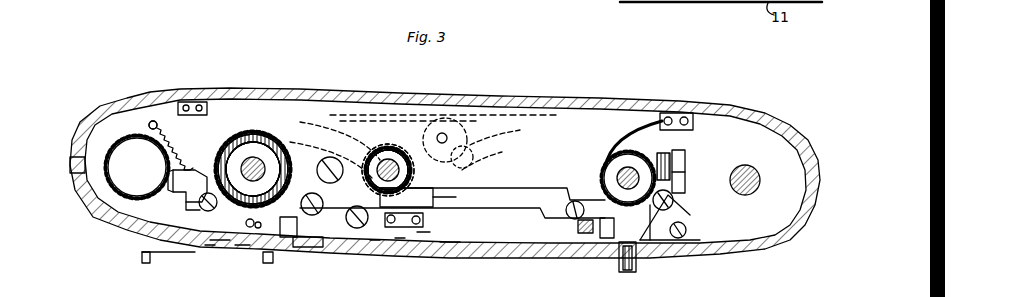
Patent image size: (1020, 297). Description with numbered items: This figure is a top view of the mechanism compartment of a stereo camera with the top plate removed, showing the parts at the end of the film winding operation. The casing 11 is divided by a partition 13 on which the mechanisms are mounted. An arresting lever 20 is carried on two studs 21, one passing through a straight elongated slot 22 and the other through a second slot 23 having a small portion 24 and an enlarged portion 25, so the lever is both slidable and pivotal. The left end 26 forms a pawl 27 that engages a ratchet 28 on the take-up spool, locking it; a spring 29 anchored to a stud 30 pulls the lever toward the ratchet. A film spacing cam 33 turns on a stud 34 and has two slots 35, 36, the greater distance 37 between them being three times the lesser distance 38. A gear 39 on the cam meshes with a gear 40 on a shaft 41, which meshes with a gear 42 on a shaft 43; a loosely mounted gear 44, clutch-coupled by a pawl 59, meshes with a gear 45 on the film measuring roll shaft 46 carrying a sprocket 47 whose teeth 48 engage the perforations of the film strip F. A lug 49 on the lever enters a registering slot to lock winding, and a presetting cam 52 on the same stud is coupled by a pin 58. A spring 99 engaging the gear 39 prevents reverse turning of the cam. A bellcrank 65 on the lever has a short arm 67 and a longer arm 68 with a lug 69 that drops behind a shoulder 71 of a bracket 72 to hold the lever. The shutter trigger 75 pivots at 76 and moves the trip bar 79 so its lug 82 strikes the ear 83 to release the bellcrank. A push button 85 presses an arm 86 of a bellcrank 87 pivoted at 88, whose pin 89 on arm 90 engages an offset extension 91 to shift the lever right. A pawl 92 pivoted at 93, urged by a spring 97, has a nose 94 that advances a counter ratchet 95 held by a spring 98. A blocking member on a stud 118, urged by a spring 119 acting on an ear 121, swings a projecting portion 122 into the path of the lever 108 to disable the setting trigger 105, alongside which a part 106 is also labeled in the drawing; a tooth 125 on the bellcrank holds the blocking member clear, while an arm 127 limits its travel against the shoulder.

The camera casing 11 is at (780, 242).
The partition 13 is at (756, 171).
The lever 20 is at (528, 190).
The studs 21 is at (205, 245).
The elongated slot 22 is at (570, 216).
The second slot 23 is at (193, 208).
The small portion 24 is at (215, 255).
The enlarged portion 25 is at (205, 210).
The left end 26 is at (196, 168).
The pawl 27 is at (172, 176).
The ratchet 28 is at (127, 185).
The spring 29 is at (150, 140).
The stud 30 is at (151, 122).
The film spacing cam 33 is at (243, 133).
The stud 34 is at (240, 130).
The slot 35 is at (253, 132).
The slot 36 is at (300, 152).
The greater distance 37 is at (240, 155).
The lesser distance 38 is at (270, 133).
The gear 39 is at (281, 132).
The gear 40 is at (313, 140).
The shaft 41 is at (337, 150).
The gear 42 is at (397, 150).
The shaft 43 is at (418, 150).
The gear 44 is at (462, 170).
The gear 45 is at (470, 145).
The film measuring roll shaft 46 is at (463, 150).
The sprocket 47 is at (492, 133).
The teeth 48 is at (522, 133).
The film strip F is at (540, 120).
The lug 49 is at (322, 167).
The presetting cam 52 is at (233, 140).
The pin 58 is at (258, 228).
The pawl 59 is at (247, 226).
The bellcrank 65 is at (327, 147).
The short arm 67 is at (340, 247).
The longer arm 68 is at (444, 134).
The lug 69 is at (420, 200).
The shoulder 71 is at (440, 200).
The bracket 72 is at (425, 220).
The shutter trigger 75 is at (143, 258).
The pivot 76 is at (185, 258).
The shutter trip bar 79 is at (240, 250).
The lug 82 is at (318, 248).
The ear 83 is at (357, 243).
The push button 85 is at (634, 275).
The arm 86 is at (608, 240).
The bellcrank 87 is at (683, 243).
The pivot 88 is at (686, 231).
The pin 89 is at (680, 157).
The arm 90 is at (682, 170).
The offset extension 91 is at (680, 185).
The pawl 92 is at (683, 215).
The pivot 93 is at (673, 203).
The nose 94 is at (605, 196).
The counter ratchet 95 is at (612, 163).
The spring 97 is at (655, 232).
The spring 98 is at (656, 125).
The spring 99 is at (177, 100).
The setting trigger 105 is at (290, 265).
The bracket 106 is at (318, 265).
The lever 108 is at (445, 242).
The stud 118 is at (395, 238).
The spring 119 is at (370, 240).
The ear 121 is at (350, 150).
The radially projecting portion 122 is at (417, 232).
The tooth 125 is at (367, 150).
The arm 127 is at (378, 150).